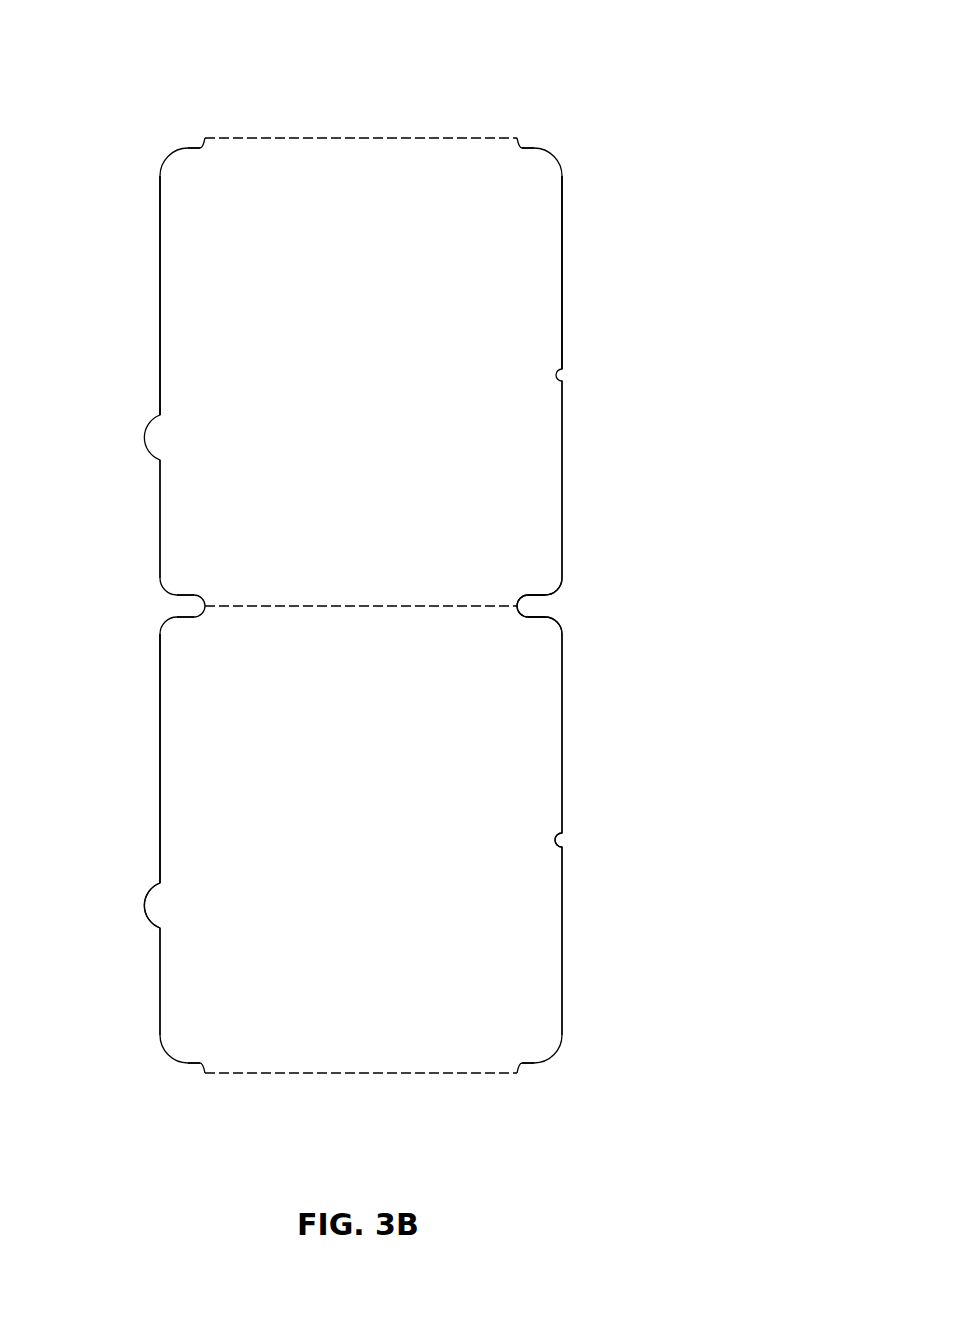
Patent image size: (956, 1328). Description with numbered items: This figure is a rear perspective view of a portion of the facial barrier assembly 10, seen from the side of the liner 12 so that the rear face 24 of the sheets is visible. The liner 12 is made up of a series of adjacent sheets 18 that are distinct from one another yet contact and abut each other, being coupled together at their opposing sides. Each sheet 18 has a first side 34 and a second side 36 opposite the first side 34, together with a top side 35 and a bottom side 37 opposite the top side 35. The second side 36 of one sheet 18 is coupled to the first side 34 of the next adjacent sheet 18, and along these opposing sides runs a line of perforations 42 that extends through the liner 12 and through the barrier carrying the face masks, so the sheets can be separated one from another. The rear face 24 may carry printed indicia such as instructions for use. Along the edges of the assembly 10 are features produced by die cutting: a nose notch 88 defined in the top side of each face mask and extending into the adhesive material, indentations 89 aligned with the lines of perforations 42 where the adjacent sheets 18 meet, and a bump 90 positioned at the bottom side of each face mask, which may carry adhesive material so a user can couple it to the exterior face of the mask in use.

The facial barrier assembly 10 is at (586, 56).
The liner 12 is at (532, 252).
The sheet 18 is at (178, 253).
The rear face 24 is at (497, 458).
The first side 34 is at (400, 160).
The top side 35 is at (528, 775).
The second side 36 is at (430, 582).
The bottom side 37 is at (177, 700).
The line of perforations 42 is at (316, 133).
The notch 88 is at (578, 839).
The indentation 89 is at (570, 604).
The bump 90 is at (152, 903).